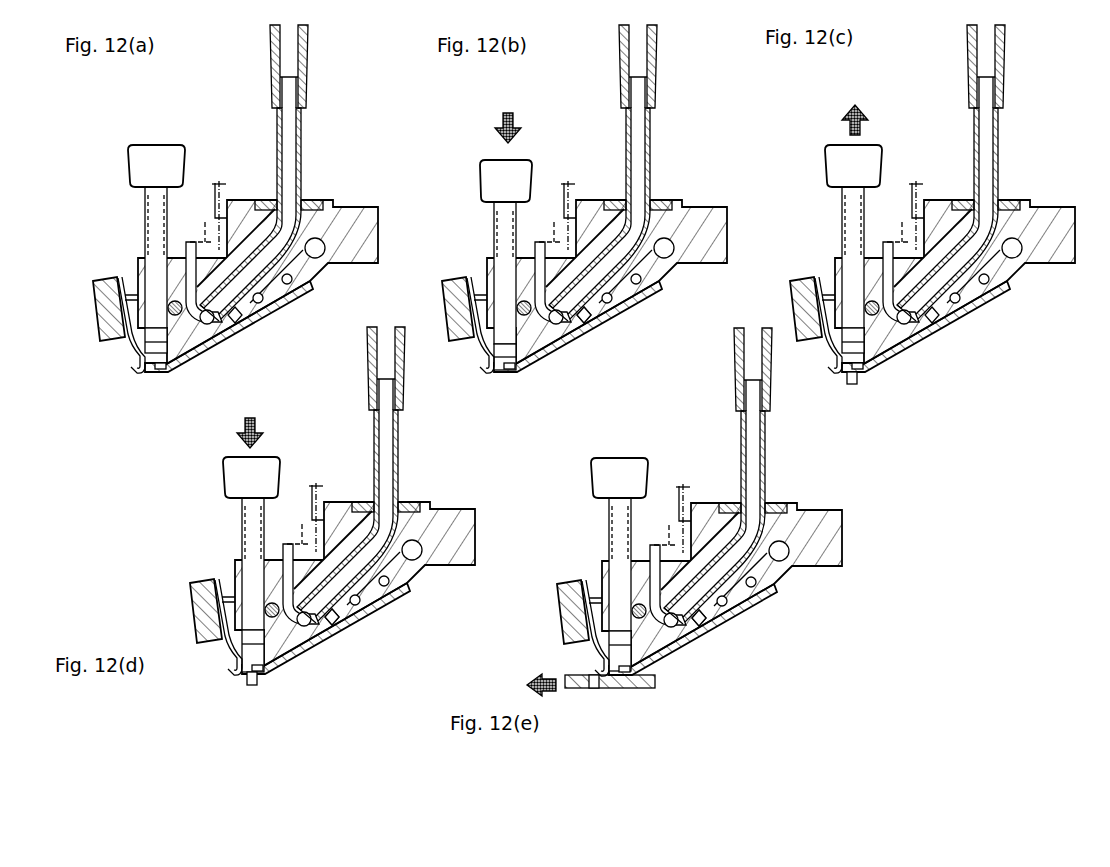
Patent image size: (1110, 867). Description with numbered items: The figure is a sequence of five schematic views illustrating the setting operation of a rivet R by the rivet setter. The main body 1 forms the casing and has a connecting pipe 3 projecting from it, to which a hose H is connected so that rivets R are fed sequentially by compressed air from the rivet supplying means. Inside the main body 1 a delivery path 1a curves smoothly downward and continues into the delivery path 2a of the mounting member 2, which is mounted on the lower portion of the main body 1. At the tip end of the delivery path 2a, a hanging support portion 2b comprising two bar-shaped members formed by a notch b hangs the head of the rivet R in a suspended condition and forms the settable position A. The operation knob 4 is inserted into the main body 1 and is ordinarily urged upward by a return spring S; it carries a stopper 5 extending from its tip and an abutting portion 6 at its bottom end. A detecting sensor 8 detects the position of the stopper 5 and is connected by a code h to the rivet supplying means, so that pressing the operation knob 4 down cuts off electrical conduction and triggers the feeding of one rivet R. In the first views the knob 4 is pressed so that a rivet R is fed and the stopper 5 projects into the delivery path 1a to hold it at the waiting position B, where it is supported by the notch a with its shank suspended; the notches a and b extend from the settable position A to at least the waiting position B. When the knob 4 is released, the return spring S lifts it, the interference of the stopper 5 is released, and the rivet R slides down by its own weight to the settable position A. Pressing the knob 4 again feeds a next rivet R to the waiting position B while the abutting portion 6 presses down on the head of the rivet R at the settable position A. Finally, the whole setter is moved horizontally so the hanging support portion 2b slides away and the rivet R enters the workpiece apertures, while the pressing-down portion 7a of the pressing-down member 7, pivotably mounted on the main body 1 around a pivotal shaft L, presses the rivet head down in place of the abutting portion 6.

In FIG. 12A, the main body 1 is at (357, 232).
In FIG. 12B, the main body 1 is at (607, 258).
In FIG. 12C, the main body 1 is at (955, 258).
In FIG. 12D, the main body 1 is at (355, 557).
In FIG. 12E, the main body 1 is at (722, 558).
In FIG. 12A, the delivery path 1a is at (270, 260).
In FIG. 12B, the delivery path 1a is at (634, 213).
In FIG. 12C, the delivery path 1a is at (982, 213).
In FIG. 12D, the delivery path 1a is at (382, 513).
In FIG. 12E, the delivery path 1a is at (751, 513).
In FIG. 12A, the mounting member 2 is at (312, 290).
In FIG. 12B, the mounting member 2 is at (593, 326).
In FIG. 12C, the mounting member 2 is at (941, 326).
In FIG. 12D, the mounting member 2 is at (341, 628).
In FIG. 12E, the mounting member 2 is at (707, 629).
In FIG. 12A, the delivery path 2a is at (207, 335).
In FIG. 12B, the delivery path 2a is at (551, 350).
In FIG. 12C, the delivery path 2a is at (916, 346).
In FIG. 12D, the delivery path 2a is at (309, 651).
In FIG. 12E, the delivery path 2a is at (672, 650).
In FIG. 12A, the hanging support portion 2b is at (162, 372).
In FIG. 12B, the hanging support portion 2b is at (511, 394).
In FIG. 12C, the hanging support portion 2b is at (869, 394).
In FIG. 12D, the hanging support portion 2b is at (267, 695).
In FIG. 12E, the hanging support portion 2b is at (633, 695).
In FIG. 12A, the connecting pipe 3 is at (303, 125).
In FIG. 12B, the connecting pipe 3 is at (632, 199).
In FIG. 12C, the connecting pipe 3 is at (980, 199).
In FIG. 12D, the connecting pipe 3 is at (369, 501).
In FIG. 12E, the connecting pipe 3 is at (737, 502).
In FIG. 12A, the operation knob 4 is at (130, 160).
In FIG. 12B, the operation knob 4 is at (478, 265).
In FIG. 12C, the operation knob 4 is at (827, 249).
In FIG. 12D, the operation knob 4 is at (227, 564).
In FIG. 12E, the operation knob 4 is at (594, 562).
In FIG. 12A, the stopper 5 is at (189, 248).
In FIG. 12B, the stopper 5 is at (547, 262).
In FIG. 12C, the stopper 5 is at (895, 259).
In FIG. 12D, the stopper 5 is at (294, 563).
In FIG. 12E, the stopper 5 is at (661, 563).
In FIG. 12A, the abutting portion 6 is at (140, 352).
In FIG. 12B, the abutting portion 6 is at (466, 322).
In FIG. 12C, the abutting portion 6 is at (814, 321).
In FIG. 12D, the abutting portion 6 is at (213, 624).
In FIG. 12E, the abutting portion 6 is at (582, 624).
In FIG. 12A, the pressing-down member 7 is at (95, 310).
In FIG. 12B, the pressing-down member 7 is at (440, 309).
In FIG. 12C, the pressing-down member 7 is at (788, 309).
In FIG. 12D, the pressing-down member 7 is at (188, 611).
In FIG. 12E, the pressing-down member 7 is at (558, 612).
In FIG. 12A, the pressing-down portion 7a is at (133, 374).
In FIG. 12B, the pressing-down portion 7a is at (473, 391).
In FIG. 12C, the pressing-down portion 7a is at (821, 391).
In FIG. 12D, the pressing-down portion 7a is at (221, 692).
In FIG. 12E, the pressing-down portion 7a is at (564, 663).
In FIG. 12A, the detecting sensor 8 is at (207, 228).
In FIG. 12B, the detecting sensor 8 is at (557, 198).
In FIG. 12C, the detecting sensor 8 is at (905, 198).
In FIG. 12D, the detecting sensor 8 is at (305, 500).
In FIG. 12E, the detecting sensor 8 is at (672, 500).
In FIG. 12A, the hose H is at (303, 53).
In FIG. 12B, the hose H is at (671, 66).
In FIG. 12C, the hose H is at (1019, 66).
In FIG. 12D, the hose H is at (359, 368).
In FIG. 12E, the hose H is at (726, 369).
In FIG. 12A, the code h is at (223, 180).
In FIG. 12B, the code h is at (575, 185).
In FIG. 12C, the code h is at (923, 185).
In FIG. 12D, the code h is at (322, 484).
In FIG. 12E, the code h is at (689, 485).
In FIG. 12A, the pivotal shaft L is at (167, 303).
In FIG. 12B, the pivotal shaft L is at (494, 281).
In FIG. 12C, the pivotal shaft L is at (842, 281).
In FIG. 12D, the pivotal shaft L is at (242, 581).
In FIG. 12E, the pivotal shaft L is at (610, 580).
In FIG. 12A, the return spring S is at (145, 196).
In FIG. 12B, the return spring S is at (472, 231).
In FIG. 12C, the return spring S is at (820, 223).
In FIG. 12D, the return spring S is at (218, 532).
In FIG. 12E, the return spring S is at (588, 524).
In FIG. 12A, the settable position A is at (179, 383).
In FIG. 12B, the settable position A is at (523, 401).
In FIG. 12C, the settable position A is at (879, 401).
In FIG. 12D, the settable position A is at (278, 700).
In FIG. 12E, the settable position A is at (645, 695).
In FIG. 12A, the waiting position B is at (236, 346).
In FIG. 12B, the waiting position B is at (577, 343).
In FIG. 12C, the waiting position B is at (926, 342).
In FIG. 12D, the waiting position B is at (324, 643).
In FIG. 12E, the waiting position B is at (692, 644).
In FIG. 12B, the rivet R is at (577, 341).
In FIG. 12C, the rivet R is at (852, 398).
In FIG. 12D, the rivet R is at (289, 667).
In FIG. 12E, the rivet R is at (645, 667).
In FIG. 12A, the notch a is at (244, 318).
In FIG. 12B, the notch a is at (603, 314).
In FIG. 12C, the notch a is at (951, 314).
In FIG. 12D, the notch a is at (350, 615).
In FIG. 12E, the notch a is at (716, 615).
In FIG. 12A, the notch b is at (234, 328).
In FIG. 12B, the notch b is at (612, 315).
In FIG. 12C, the notch b is at (960, 315).
In FIG. 12D, the notch b is at (360, 616).
In FIG. 12E, the notch b is at (727, 616).